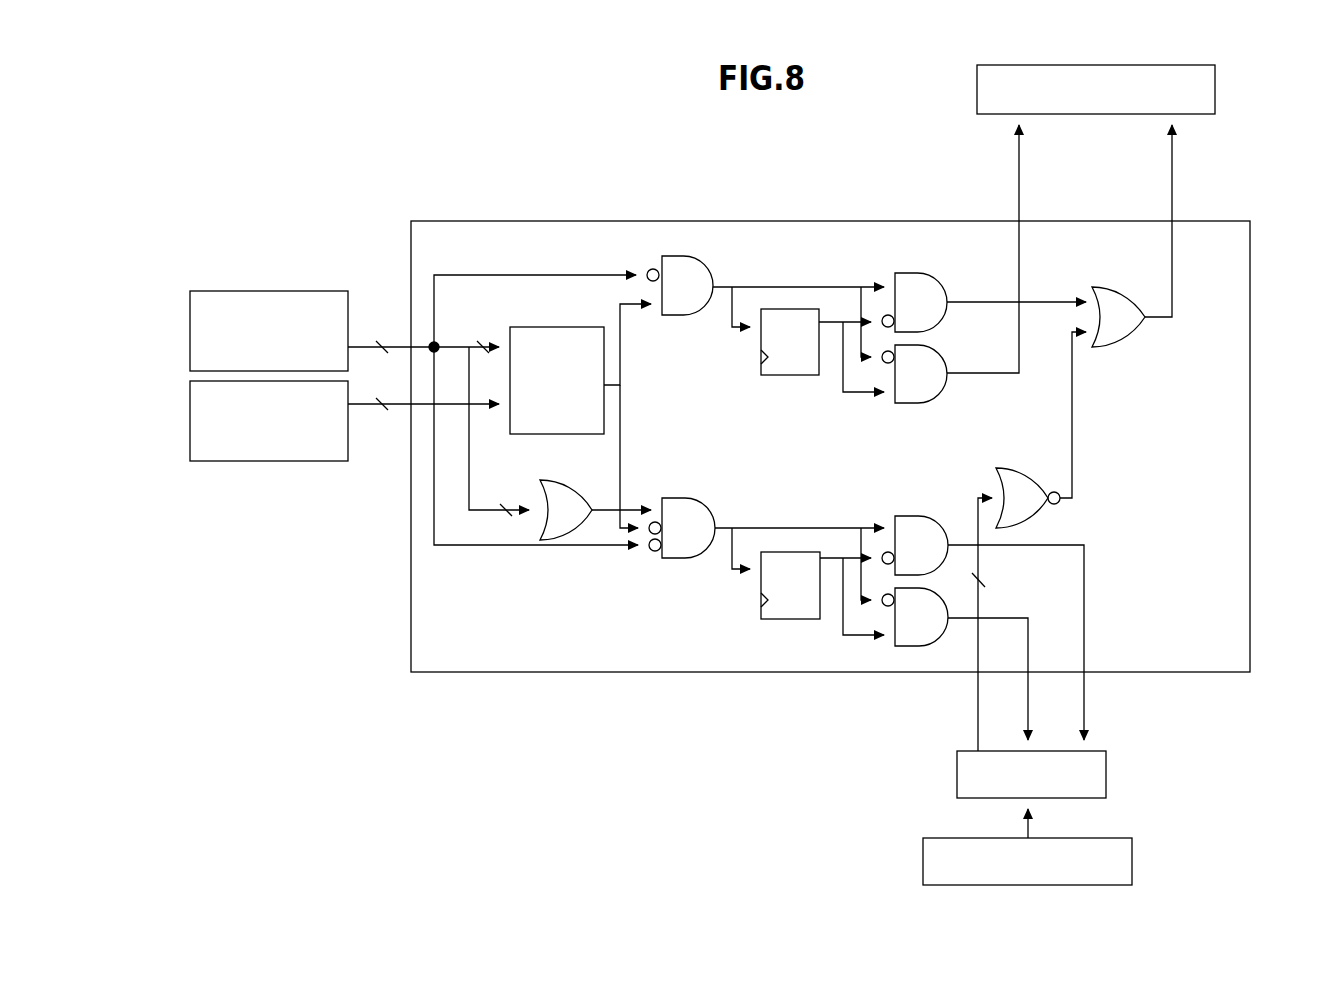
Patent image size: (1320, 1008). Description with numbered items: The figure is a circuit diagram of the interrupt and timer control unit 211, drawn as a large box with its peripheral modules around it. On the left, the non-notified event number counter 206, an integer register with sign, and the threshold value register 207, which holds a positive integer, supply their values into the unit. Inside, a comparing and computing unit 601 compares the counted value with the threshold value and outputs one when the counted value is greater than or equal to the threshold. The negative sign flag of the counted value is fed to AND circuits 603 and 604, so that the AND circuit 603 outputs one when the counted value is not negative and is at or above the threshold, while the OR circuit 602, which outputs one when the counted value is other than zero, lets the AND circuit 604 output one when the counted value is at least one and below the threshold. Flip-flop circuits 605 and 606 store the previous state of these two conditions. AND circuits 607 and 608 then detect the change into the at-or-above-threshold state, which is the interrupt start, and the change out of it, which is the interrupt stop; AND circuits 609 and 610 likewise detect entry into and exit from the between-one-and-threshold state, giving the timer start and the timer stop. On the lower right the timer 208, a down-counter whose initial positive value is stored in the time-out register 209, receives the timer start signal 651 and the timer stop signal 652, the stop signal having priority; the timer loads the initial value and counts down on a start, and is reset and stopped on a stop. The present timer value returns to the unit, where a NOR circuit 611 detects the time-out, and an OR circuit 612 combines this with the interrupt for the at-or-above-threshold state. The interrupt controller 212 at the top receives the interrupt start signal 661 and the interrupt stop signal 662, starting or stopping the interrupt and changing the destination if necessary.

The non-notified event number counter 206 is at (285, 291).
The threshold value register 207 is at (275, 461).
The timer 208 is at (1106, 775).
The time-out register 209 is at (1132, 864).
The interrupt and timer control unit 211 is at (430, 221).
The interrupt controller 212 is at (1215, 92).
The comparing and computing unit 601 is at (534, 327).
The OR circuit 602 is at (573, 465).
The AND circuit 603 is at (672, 316).
The AND circuit 604 is at (697, 486).
The flip-flop circuit 605 is at (778, 375).
The flip-flop circuit 606 is at (785, 619).
The AND circuit 607 is at (905, 273).
The AND circuit 608 is at (905, 403).
The AND circuit 609 is at (905, 516).
The AND circuit 610 is at (905, 646).
The NOR circuit 611 is at (1032, 456).
The OR circuit 612 is at (1134, 277).
The timer start signal 651 is at (1093, 633).
The timer stop signal 652 is at (1032, 638).
The interrupt start signal 661 is at (1172, 150).
The interrupt stop signal 662 is at (1019, 150).